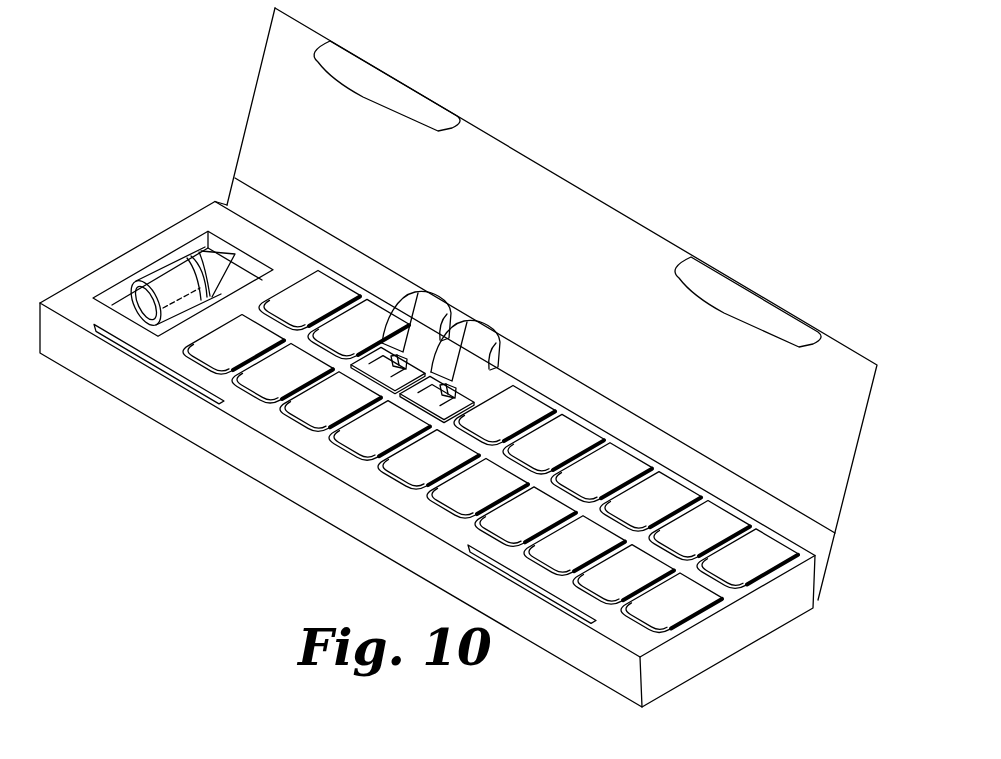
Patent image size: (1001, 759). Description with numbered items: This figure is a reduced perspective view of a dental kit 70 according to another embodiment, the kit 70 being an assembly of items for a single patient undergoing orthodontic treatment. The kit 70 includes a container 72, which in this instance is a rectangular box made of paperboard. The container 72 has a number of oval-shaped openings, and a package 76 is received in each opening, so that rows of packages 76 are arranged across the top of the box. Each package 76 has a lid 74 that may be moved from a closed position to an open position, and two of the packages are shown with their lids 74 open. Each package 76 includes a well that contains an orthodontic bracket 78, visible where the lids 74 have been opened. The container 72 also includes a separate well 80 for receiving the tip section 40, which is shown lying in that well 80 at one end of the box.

The kit 70 is at (596, 95).
The container 72 is at (636, 211).
The lid 74 is at (514, 390).
The package 76 is at (532, 393).
The orthodontic bracket 78 is at (445, 385).
The well 80 is at (110, 293).
The tip section 40 is at (158, 276).